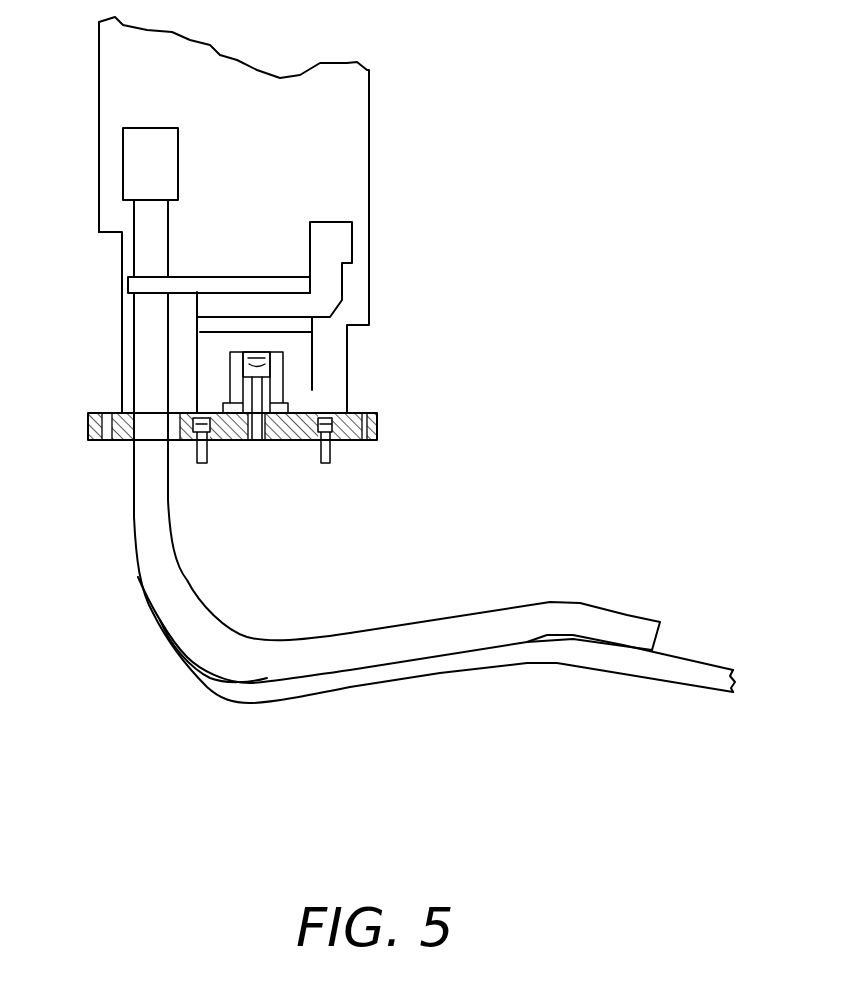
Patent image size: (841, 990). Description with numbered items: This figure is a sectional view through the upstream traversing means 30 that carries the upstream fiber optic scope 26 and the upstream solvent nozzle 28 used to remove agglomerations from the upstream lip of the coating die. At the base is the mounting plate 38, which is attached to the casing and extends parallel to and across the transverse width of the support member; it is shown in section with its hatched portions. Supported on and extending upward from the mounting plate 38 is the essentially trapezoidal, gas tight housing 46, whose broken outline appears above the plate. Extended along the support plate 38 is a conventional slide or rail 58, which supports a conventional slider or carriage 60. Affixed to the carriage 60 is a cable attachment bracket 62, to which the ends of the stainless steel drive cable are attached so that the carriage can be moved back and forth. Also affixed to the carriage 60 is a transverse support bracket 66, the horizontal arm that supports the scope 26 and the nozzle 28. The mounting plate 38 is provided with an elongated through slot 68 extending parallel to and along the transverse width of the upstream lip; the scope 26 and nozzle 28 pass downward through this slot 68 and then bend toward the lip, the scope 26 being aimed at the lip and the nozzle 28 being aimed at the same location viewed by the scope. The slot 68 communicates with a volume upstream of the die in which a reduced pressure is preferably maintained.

The upstream fiber optic scope 26 is at (460, 627).
The upstream solvent nozzle 28 is at (557, 657).
The traversing means 30 is at (290, 205).
The mounting plate 38 is at (88, 425).
The gas tight housing 46 is at (99, 118).
The slide or rail 58 is at (270, 387).
The slider or carriage 60 is at (300, 355).
The cable attachment bracket 62 is at (330, 285).
The transverse support bracket 66 is at (223, 276).
The elongated through slot 68 is at (129, 444).